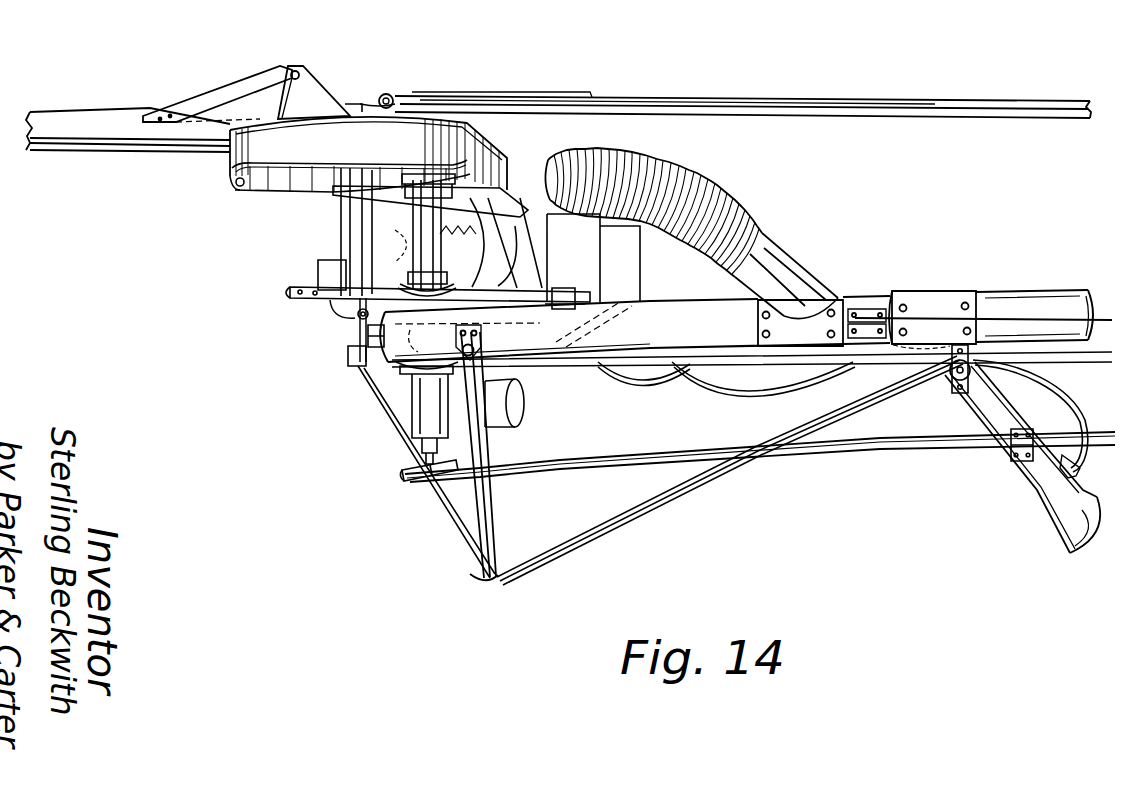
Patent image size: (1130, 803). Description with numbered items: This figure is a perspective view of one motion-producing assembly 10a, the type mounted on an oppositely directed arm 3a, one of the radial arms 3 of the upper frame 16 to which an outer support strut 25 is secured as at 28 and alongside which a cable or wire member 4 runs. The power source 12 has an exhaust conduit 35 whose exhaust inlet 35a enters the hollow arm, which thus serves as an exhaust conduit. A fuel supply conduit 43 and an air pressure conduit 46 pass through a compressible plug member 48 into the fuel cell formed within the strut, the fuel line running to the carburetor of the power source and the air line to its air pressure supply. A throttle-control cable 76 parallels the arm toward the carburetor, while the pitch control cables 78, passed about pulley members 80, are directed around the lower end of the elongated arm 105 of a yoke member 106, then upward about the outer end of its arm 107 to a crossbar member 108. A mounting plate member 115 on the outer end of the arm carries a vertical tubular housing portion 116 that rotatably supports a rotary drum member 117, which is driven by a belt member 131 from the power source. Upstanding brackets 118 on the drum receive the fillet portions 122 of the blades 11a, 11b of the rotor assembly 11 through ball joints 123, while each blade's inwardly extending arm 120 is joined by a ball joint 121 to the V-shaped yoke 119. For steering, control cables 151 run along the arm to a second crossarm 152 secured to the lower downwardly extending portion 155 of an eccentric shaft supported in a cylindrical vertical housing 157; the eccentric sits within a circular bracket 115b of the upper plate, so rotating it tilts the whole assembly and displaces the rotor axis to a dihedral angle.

The upper arm 3 is at (690, 302).
The oppositely directed arm 3a is at (1040, 290).
The cable or wire member 4 is at (1000, 316).
The lift or motion-producing assembly 10a is at (312, 245).
The rotor assembly 11 is at (771, 98).
The blade 11a is at (648, 102).
The blade 11b is at (47, 120).
The power source 12 is at (632, 262).
The upper frame 16 is at (352, 138).
The outer support strut 25 is at (1046, 522).
The securing point 28 is at (930, 300).
The exhaust conduit 35 is at (700, 186).
The exhaust inlet 35a is at (805, 276).
The fuel supply conduit 43 is at (360, 336).
The air pressure conduit 46 is at (713, 392).
The compressible plug member 48 is at (1066, 470).
The throttle-control cable 76 is at (341, 311).
The pitch control cable 78 is at (692, 490).
The pulley member 80 is at (950, 382).
The elongated arm 105 is at (488, 449).
The yoke member 106 is at (400, 376).
The arm 107 is at (355, 366).
The crossbar member 108 is at (341, 322).
The mounting plate member 115 is at (506, 284).
The circular bracket 115b is at (470, 186).
The vertical tubular housing portion 116 is at (343, 211).
The rotary drum member 117 is at (270, 181).
The upstanding bracket 118 is at (308, 86).
The V-shaped yoke 119 is at (363, 103).
The inwardly extending arm 120 is at (398, 96).
The ball joint 121 is at (390, 97).
The fillet portion 122 is at (212, 87).
The ball joint 123 is at (292, 70).
The belt member 131 is at (488, 154).
The control cable 151 is at (612, 459).
The second crossarm 152 is at (412, 482).
The lower downwardly extending portion 155 is at (410, 468).
The cylindrical vertical housing 157 is at (412, 410).